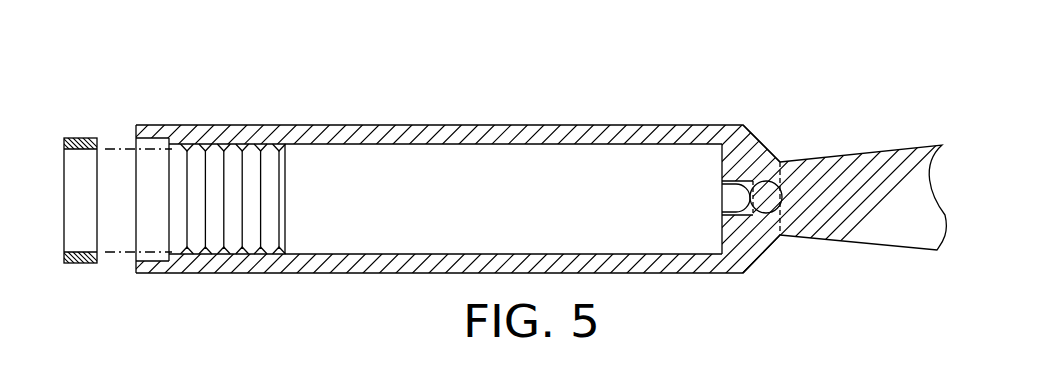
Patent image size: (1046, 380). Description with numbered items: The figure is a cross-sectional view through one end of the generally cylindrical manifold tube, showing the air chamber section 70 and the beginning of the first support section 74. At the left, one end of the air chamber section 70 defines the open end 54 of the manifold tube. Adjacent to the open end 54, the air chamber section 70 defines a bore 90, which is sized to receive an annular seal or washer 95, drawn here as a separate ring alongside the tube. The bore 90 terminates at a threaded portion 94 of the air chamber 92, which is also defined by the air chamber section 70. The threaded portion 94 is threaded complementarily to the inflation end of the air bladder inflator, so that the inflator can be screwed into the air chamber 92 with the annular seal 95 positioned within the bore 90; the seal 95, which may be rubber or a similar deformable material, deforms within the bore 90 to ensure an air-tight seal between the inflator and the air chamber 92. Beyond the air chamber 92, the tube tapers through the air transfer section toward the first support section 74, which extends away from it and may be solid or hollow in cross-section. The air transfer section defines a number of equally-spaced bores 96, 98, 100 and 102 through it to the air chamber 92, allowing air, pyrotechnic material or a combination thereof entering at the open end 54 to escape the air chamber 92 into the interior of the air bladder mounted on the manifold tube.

The open end 54 is at (134, 258).
The air chamber section 70 is at (463, 125).
The first support section 74 is at (879, 151).
The bore 90 is at (163, 201).
The air chamber 92 is at (538, 213).
The threaded portion 94 is at (238, 189).
The annular seal or washer 95 is at (73, 138).
The bore 96 is at (767, 150).
The bore 98 is at (766, 246).
The bore 100 is at (732, 195).
The bore 102 is at (781, 191).